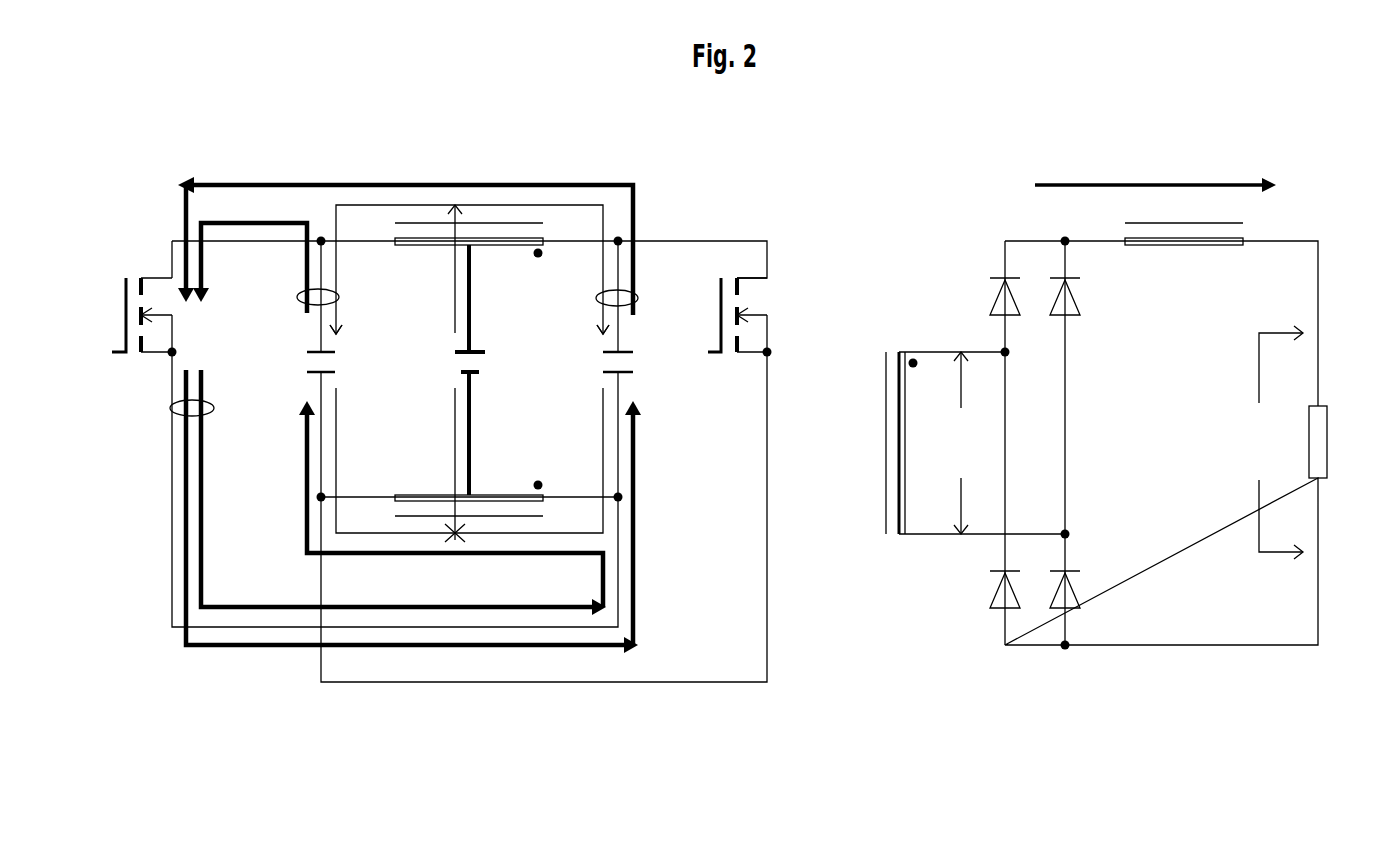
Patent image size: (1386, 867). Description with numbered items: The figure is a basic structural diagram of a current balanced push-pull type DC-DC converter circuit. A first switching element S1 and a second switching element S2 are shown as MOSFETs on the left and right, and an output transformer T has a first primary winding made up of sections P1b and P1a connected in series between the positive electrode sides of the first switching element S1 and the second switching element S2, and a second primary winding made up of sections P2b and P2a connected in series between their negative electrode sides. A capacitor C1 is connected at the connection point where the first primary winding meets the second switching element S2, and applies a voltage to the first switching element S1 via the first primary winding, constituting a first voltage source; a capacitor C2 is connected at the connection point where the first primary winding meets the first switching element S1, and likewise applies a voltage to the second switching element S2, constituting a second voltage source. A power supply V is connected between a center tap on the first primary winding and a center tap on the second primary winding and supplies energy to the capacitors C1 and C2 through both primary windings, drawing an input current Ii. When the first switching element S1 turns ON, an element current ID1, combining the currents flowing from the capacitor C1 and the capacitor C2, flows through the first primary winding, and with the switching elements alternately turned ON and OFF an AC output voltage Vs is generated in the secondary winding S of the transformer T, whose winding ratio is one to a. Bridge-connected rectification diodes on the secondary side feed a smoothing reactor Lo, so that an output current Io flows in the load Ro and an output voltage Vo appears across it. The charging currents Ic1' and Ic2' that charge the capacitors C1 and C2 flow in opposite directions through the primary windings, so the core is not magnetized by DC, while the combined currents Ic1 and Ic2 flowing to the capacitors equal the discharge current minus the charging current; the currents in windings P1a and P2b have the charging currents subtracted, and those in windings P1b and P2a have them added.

The first switching element S1 is at (166, 315).
The second switching element S2 is at (764, 315).
The capacitor C1 is at (593, 368).
The capacitor C2 is at (342, 368).
The primary winding P1a is at (506, 298).
The primary winding P1b is at (469, 249).
The primary winding P2a is at (506, 433).
The primary winding P2b is at (469, 492).
The power supply V is at (475, 388).
The input current Ii is at (449, 373).
The combined current Ic1 is at (645, 296).
The charging current Ic1' is at (581, 309).
The combined current Ic2 is at (289, 296).
The charging current Ic2' is at (365, 309).
The element current ID1 is at (170, 408).
The output transformer T is at (889, 427).
The secondary winding S is at (982, 443).
The output voltage Vs is at (967, 443).
The reactor Lo is at (1184, 249).
The output current Io is at (1169, 187).
The load Ro is at (1343, 442).
The output voltage Vo is at (1270, 442).